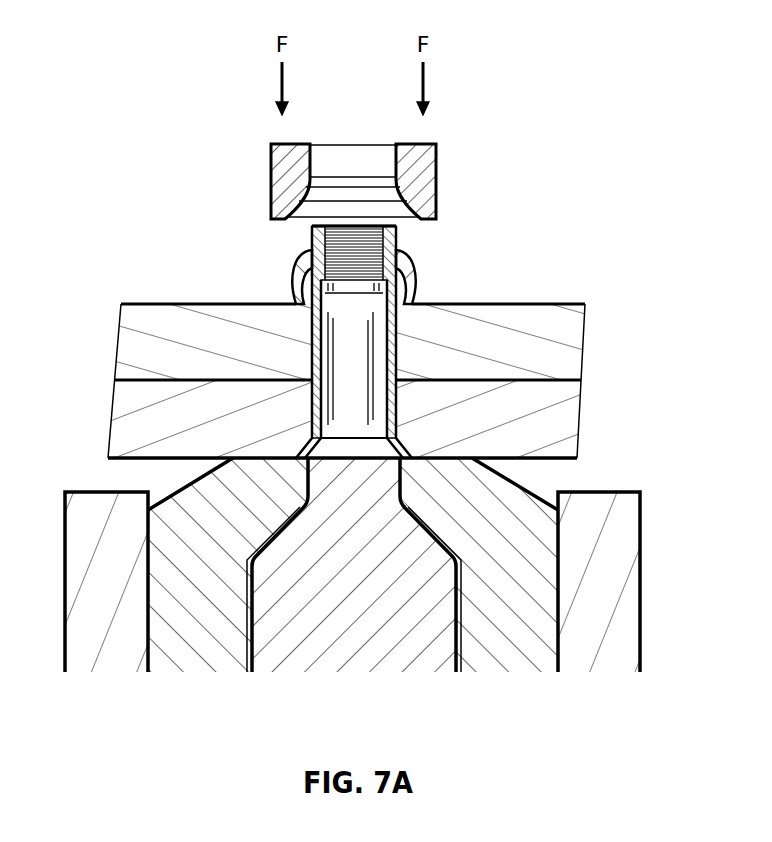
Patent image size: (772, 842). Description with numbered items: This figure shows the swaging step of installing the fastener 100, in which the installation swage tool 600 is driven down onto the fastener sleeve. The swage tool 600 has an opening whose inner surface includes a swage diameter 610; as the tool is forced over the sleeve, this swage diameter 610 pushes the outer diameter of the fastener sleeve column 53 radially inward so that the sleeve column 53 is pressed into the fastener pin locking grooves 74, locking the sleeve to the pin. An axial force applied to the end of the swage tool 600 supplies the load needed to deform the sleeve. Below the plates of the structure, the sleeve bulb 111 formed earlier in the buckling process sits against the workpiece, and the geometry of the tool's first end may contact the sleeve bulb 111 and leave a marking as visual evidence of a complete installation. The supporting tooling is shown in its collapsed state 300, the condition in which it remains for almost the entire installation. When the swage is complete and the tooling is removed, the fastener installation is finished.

The installation swage tool 600 is at (437, 143).
The swage diameter 610 is at (394, 196).
The fastener pin locking grooves 74 is at (365, 260).
The fastener sleeve column 53 is at (312, 247).
The sleeve bulb 111 is at (408, 288).
The fastener 100 is at (346, 339).
The collapsed state 300 is at (768, 600).